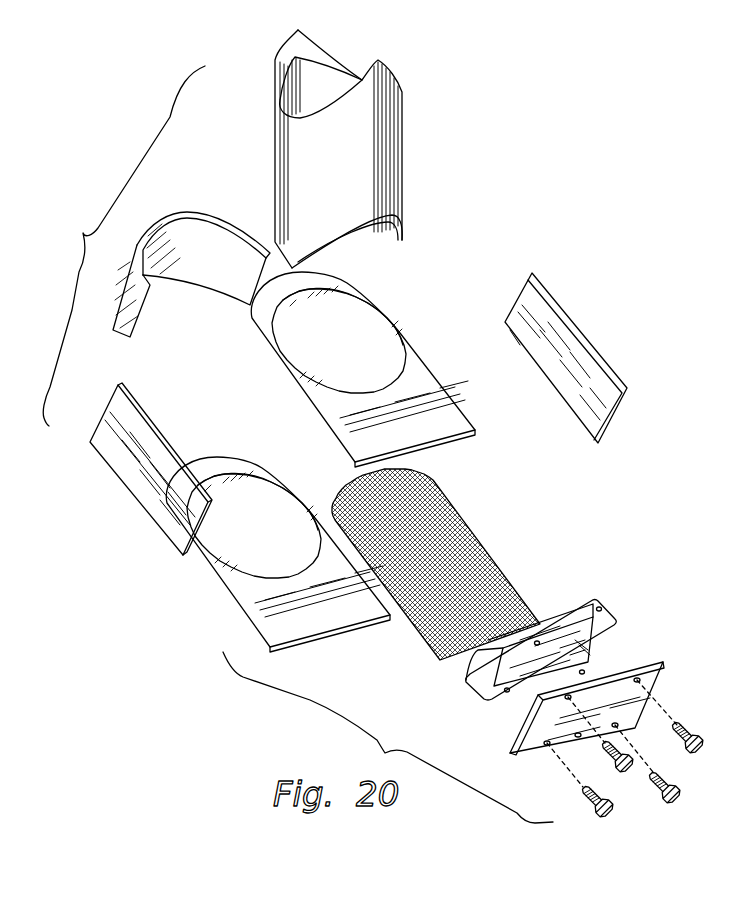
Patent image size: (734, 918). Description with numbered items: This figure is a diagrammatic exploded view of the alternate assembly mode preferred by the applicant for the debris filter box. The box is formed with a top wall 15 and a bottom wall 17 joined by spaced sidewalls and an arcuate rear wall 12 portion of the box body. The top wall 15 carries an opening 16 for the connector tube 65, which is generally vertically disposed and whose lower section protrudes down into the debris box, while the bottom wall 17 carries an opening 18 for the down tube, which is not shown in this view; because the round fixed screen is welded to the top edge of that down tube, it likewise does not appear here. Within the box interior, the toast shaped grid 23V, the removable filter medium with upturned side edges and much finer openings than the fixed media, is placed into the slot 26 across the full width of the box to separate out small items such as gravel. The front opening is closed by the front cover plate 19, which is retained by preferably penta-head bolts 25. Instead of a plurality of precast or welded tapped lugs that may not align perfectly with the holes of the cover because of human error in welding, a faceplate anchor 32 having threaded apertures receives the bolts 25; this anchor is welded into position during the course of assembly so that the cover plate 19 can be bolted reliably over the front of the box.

The curved band 12 is at (178, 210).
The connector tube 65 is at (398, 157).
The top wall 15 is at (364, 369).
The opening for tube 65 16 is at (347, 352).
The bottom wall 17 is at (240, 517).
The opening for tube 53 18 is at (267, 542).
The toast shaped grid 23V is at (488, 530).
The faceplate anchor 32 is at (600, 607).
The front cover plate 19 is at (614, 722).
The slot 26 is at (571, 760).
The bolts 25 is at (693, 755).